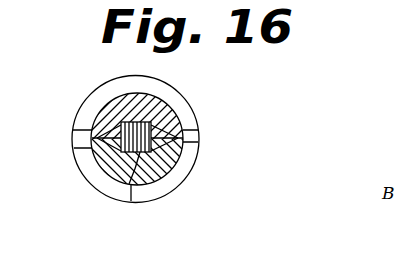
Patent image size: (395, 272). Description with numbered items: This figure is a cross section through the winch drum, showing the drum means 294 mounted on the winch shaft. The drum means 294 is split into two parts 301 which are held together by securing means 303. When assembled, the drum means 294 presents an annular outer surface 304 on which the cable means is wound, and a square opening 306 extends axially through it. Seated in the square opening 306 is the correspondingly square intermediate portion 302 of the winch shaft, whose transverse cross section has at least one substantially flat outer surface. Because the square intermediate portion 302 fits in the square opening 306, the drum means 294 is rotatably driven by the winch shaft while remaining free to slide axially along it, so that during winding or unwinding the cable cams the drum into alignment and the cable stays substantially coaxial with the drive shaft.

The drum means 294 is at (124, 92).
The annular outer surface 304 is at (160, 108).
The intermediate portion 302 is at (165, 136).
The parts 301 is at (72, 130).
The securing means 303 is at (186, 172).
The square opening 306 is at (131, 201).